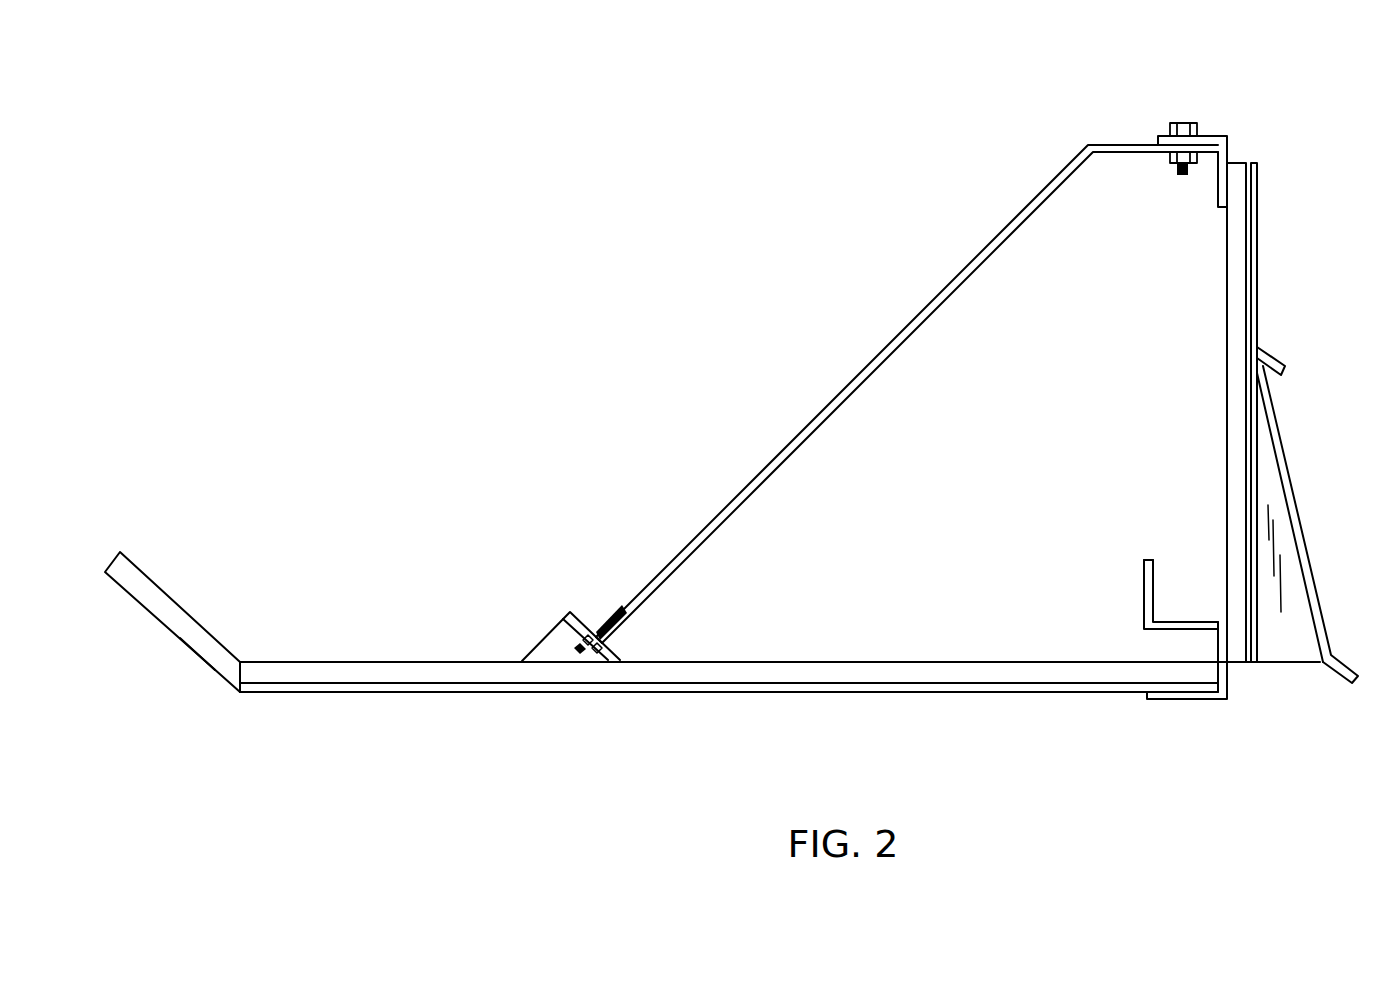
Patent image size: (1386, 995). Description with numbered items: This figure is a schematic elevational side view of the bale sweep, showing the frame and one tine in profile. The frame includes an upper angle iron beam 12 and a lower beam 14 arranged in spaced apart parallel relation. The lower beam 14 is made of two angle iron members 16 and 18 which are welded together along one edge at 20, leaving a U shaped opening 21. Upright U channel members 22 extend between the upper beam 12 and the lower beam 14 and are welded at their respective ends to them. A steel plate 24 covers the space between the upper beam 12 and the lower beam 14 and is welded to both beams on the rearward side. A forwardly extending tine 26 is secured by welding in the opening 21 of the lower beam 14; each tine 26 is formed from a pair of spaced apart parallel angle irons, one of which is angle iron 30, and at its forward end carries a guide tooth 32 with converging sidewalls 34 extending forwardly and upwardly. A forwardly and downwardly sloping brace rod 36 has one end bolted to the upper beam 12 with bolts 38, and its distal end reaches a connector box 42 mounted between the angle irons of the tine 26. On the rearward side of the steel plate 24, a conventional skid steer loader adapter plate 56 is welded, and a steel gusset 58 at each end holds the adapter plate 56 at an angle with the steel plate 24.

The upper angle iron beam 12 is at (1230, 146).
The lower beam 14 is at (1128, 573).
The angle iron member 16 is at (1153, 598).
The angle iron member 18 is at (1222, 693).
The welded edge 20 is at (1213, 635).
The U shaped opening 21 is at (1209, 647).
The upright U channel member 22 is at (1237, 332).
The steel plate 24 is at (1251, 305).
The tine 26 is at (740, 712).
The angle iron 30 is at (478, 672).
The guide tooth 32 is at (162, 636).
The converging sidewall 34 is at (211, 654).
The brace rod 36 is at (780, 462).
The bolt 38 is at (1183, 123).
The connector box 42 is at (527, 631).
The skid steer loader adapter plate 56 is at (1283, 408).
The steel gusset 58 is at (1288, 582).